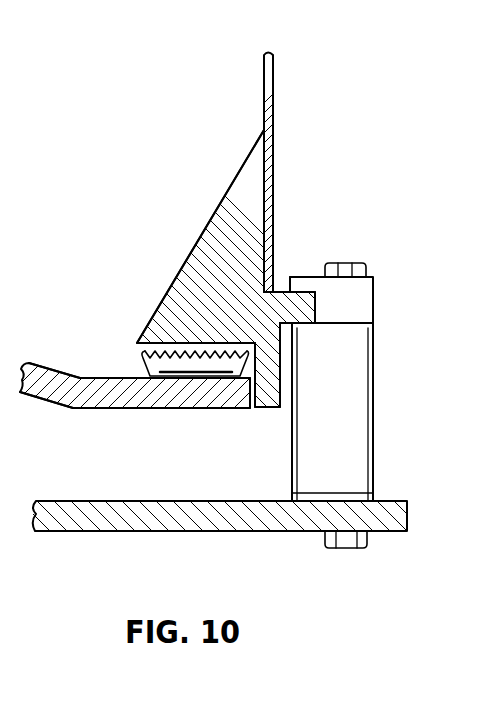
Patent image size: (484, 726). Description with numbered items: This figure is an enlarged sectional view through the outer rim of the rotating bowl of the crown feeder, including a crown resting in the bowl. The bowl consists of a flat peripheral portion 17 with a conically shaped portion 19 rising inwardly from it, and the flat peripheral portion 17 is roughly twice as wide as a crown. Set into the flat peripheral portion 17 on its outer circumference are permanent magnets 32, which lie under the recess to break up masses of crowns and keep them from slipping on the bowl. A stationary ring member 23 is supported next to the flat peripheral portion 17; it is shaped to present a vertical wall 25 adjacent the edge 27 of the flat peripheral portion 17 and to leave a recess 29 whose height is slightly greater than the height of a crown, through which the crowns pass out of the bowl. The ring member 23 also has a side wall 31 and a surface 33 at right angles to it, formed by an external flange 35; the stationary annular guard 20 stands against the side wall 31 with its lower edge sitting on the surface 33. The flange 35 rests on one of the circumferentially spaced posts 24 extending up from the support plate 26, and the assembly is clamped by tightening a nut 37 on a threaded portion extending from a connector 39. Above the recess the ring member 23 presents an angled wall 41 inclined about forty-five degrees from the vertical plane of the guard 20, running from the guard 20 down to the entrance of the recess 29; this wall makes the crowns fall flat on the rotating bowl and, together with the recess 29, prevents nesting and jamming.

The flat peripheral portion 17 is at (102, 405).
The conically shaped portion 19 is at (62, 372).
The annular guard 20 is at (274, 93).
The stationary ring member 23 is at (227, 220).
The posts 24 is at (360, 408).
The vertical wall 25 is at (266, 398).
The support plate 26 is at (65, 523).
The edge 27 is at (238, 407).
The recess 29 is at (147, 353).
The side wall 31 is at (264, 193).
The magnets 32 is at (210, 378).
The surface 33 is at (283, 289).
The external flange 35 is at (300, 314).
The nuts 37 is at (350, 263).
The connectors 39 is at (360, 300).
The angled wall 41 is at (183, 263).